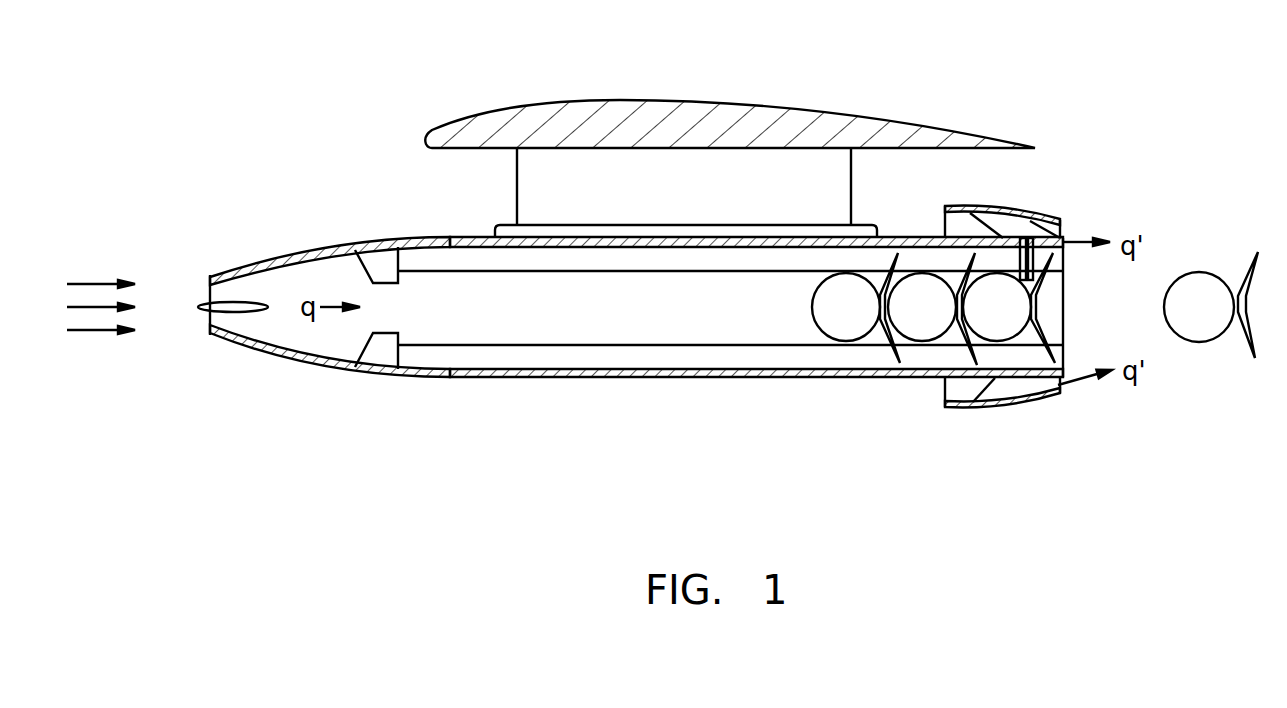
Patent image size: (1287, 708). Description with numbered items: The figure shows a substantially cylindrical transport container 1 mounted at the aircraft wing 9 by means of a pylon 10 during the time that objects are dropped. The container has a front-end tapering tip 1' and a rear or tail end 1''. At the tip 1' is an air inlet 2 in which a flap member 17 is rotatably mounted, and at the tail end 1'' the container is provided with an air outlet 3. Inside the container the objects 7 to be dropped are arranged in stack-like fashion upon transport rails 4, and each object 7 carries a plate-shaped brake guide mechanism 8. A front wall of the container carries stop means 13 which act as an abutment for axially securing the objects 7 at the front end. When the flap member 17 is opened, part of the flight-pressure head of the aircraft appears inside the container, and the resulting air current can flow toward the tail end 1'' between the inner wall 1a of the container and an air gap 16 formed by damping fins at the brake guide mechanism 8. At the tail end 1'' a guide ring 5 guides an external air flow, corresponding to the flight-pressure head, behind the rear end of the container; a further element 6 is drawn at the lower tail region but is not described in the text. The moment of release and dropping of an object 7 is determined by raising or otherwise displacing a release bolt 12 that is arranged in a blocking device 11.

The transport container 1 is at (742, 347).
The front-end tapering tip 1' is at (306, 340).
The rear or tail end 1'' is at (1078, 414).
The inner wall 1a is at (497, 365).
The air inlet 2 is at (208, 300).
The air outlet 3 is at (1060, 289).
The transport rails 4 is at (595, 358).
The guide ring 5 is at (950, 410).
The lower nozzle flap 6 is at (1020, 390).
The objects 7 is at (823, 317).
The plate-shaped brake guide mechanism 8 is at (882, 330).
The aircraft wing 9 is at (622, 125).
The pylon 10 is at (820, 165).
The blocking device 11 is at (1033, 250).
The release bolt 12 is at (1063, 238).
The stop means 13 is at (378, 258).
The air gap 16 is at (965, 265).
The flap member 17 is at (231, 312).